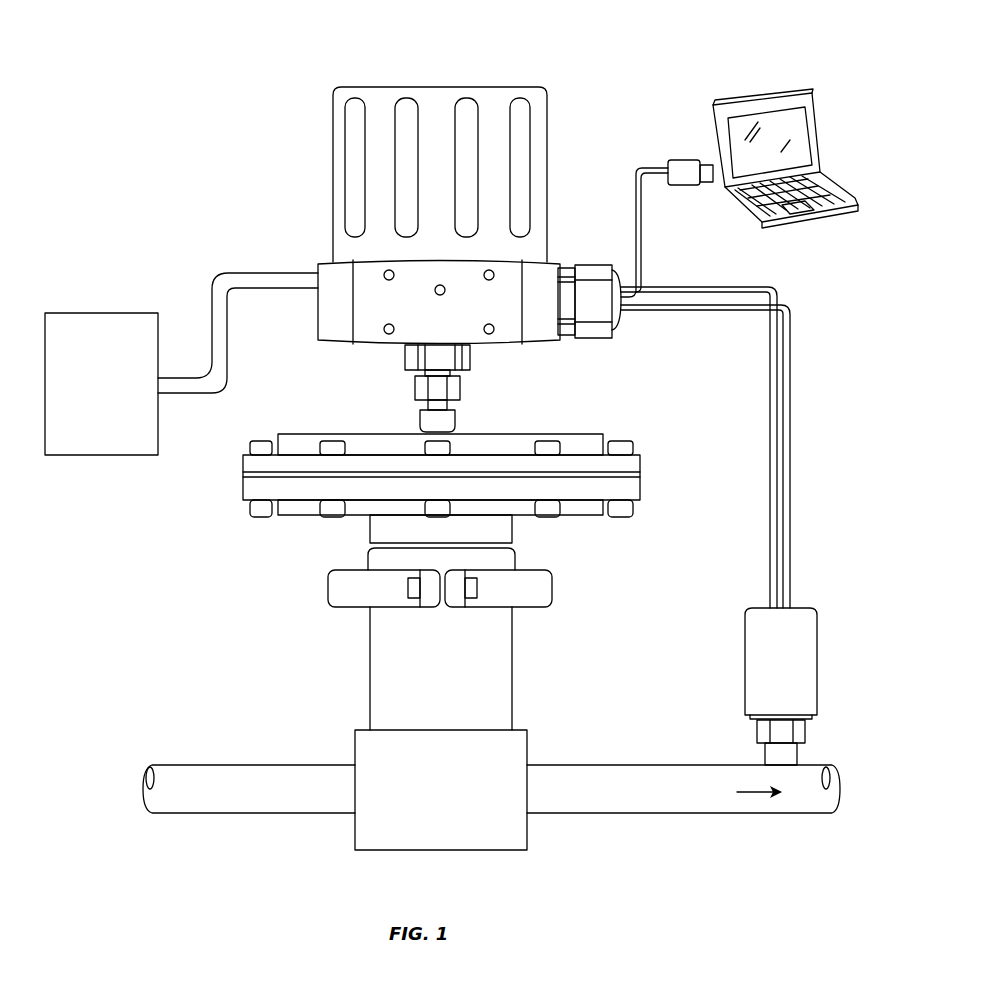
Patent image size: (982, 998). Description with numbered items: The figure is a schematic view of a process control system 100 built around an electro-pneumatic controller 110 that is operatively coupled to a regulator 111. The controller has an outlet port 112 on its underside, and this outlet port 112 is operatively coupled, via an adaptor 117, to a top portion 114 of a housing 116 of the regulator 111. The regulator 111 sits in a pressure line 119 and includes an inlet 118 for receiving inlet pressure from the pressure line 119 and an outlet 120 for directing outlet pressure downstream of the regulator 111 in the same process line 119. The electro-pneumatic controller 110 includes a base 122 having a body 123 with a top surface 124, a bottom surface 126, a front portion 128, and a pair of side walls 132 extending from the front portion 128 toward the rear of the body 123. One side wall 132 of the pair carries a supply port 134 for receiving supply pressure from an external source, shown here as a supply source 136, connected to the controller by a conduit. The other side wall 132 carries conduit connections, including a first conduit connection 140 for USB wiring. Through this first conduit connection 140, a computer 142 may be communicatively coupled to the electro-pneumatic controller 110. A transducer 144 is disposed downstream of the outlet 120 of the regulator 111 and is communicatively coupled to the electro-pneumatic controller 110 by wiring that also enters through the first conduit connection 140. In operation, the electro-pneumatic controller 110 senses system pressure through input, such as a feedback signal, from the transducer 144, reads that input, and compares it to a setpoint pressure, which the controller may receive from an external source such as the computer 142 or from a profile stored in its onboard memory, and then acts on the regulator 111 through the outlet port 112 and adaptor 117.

The process control system 100 is at (613, 37).
The electro-pneumatic controller 110 is at (317, 148).
The regulator 111 is at (353, 663).
The outlet port 112 is at (478, 348).
The top portion 114 is at (590, 433).
The housing 116 is at (511, 562).
The adaptor 117 is at (462, 392).
The inlet 118 is at (355, 780).
The pressure line 119 is at (275, 815).
The outlet 120 is at (528, 780).
The base 122 is at (542, 281).
The body 123 is at (546, 338).
The top surface 124 is at (322, 258).
The bottom surface 126 is at (359, 347).
The front portion 128 is at (456, 330).
The side walls 132 is at (318, 334).
The supply port 134 is at (318, 286).
The supply source 136 is at (103, 457).
The first conduit connection 140 is at (580, 334).
The computer 142 is at (811, 139).
The transducer 144 is at (806, 648).